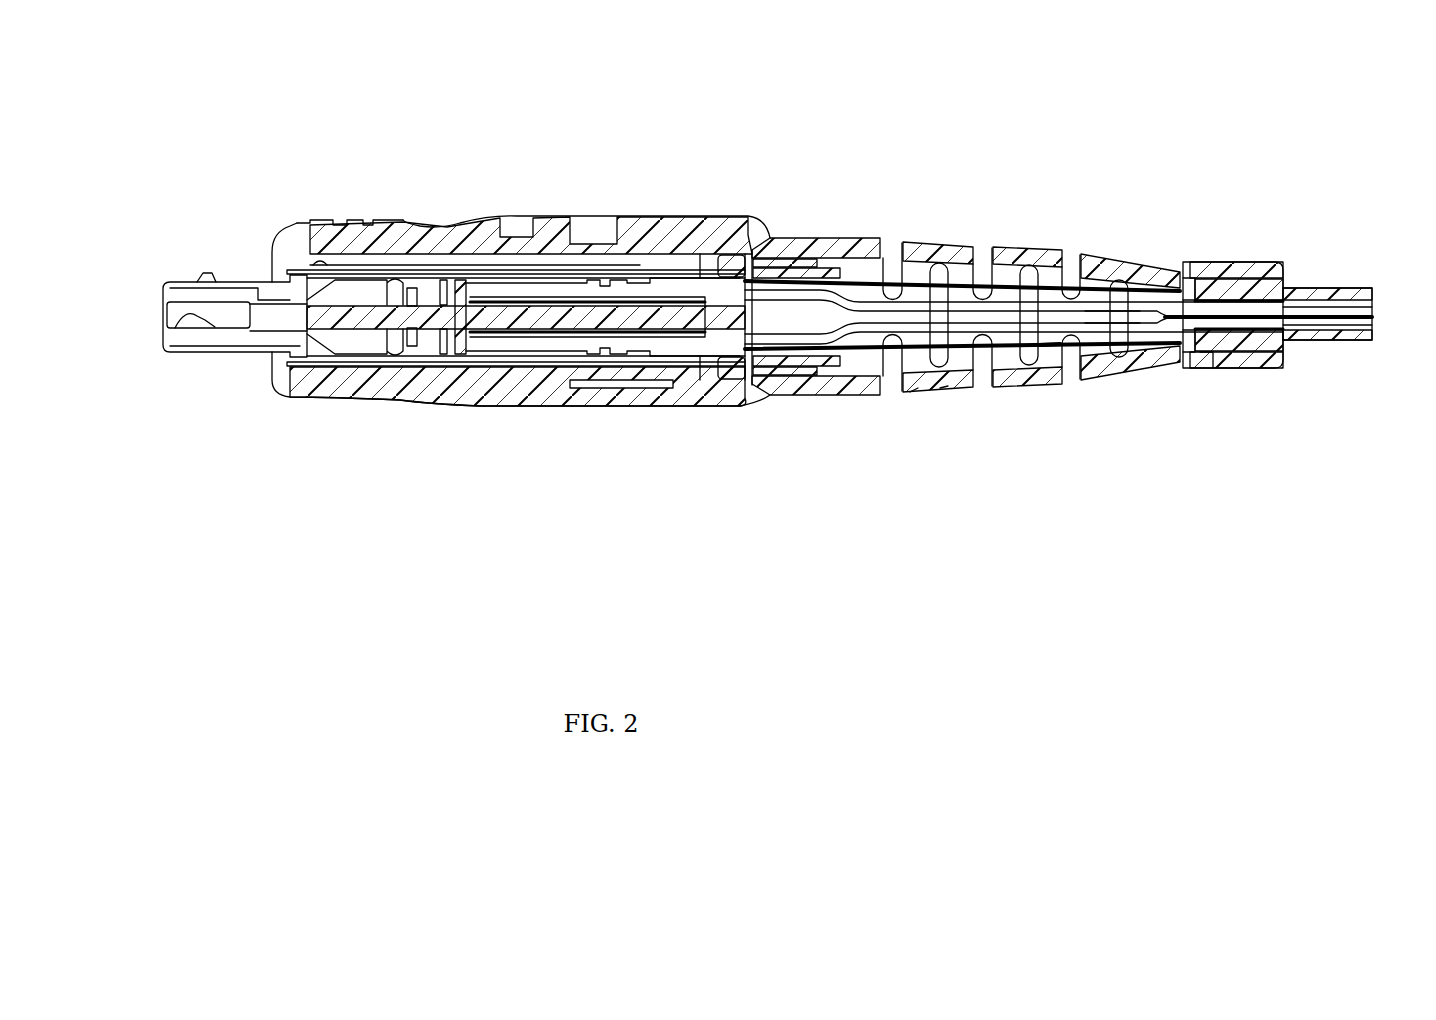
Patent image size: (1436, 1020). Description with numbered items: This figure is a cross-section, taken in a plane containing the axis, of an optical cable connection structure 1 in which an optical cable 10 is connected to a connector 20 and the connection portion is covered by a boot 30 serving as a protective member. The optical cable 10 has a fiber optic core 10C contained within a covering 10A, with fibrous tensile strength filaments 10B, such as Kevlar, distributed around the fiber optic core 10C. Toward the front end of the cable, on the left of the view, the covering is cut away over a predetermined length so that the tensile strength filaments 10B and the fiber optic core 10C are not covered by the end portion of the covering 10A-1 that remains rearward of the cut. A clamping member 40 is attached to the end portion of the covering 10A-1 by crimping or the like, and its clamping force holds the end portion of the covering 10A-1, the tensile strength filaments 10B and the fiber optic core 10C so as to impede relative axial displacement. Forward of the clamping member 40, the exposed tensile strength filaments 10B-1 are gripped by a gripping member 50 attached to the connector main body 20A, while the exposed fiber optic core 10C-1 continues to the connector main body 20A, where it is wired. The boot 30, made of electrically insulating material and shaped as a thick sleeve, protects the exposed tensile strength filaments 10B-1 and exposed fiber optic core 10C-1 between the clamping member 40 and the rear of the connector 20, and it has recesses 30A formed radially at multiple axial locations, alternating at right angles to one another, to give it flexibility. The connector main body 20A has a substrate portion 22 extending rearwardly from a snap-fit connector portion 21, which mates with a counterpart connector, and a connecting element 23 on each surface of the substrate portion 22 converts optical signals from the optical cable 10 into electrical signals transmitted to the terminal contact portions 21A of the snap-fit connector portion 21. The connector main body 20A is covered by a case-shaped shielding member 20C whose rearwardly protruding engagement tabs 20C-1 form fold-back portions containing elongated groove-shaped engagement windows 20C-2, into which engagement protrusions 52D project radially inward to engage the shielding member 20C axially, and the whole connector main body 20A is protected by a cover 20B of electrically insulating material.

The optical cable connection structure 1 is at (821, 90).
The optical cable 10 is at (1331, 284).
The covering 10A is at (1371, 289).
The end portion of the covering 10A-1 is at (1210, 368).
The tensile strength filaments 10B is at (1313, 296).
The exposed tensile strength filaments 10B-1 is at (1048, 372).
The fiber optic core 10C is at (1333, 322).
The exposed fiber optic core 10C-1 is at (1098, 332).
The connector 20 is at (424, 215).
The connector main body 20A is at (463, 266).
The cover 20B is at (390, 214).
The shielding member 20C is at (400, 378).
The engagement tabs 20C-1 is at (750, 398).
The engagement windows 20C-2 is at (717, 375).
The snap-fit connector portion 21 is at (240, 352).
The terminal contact portions 21A is at (178, 332).
The substrate portion 22 is at (344, 367).
The connecting element 23 is at (512, 302).
The boot 30 is at (1027, 250).
The recesses 30A is at (947, 384).
The clamping member 40 is at (1229, 281).
The gripping member 50 is at (802, 255).
The engagement protrusions 52D is at (729, 376).